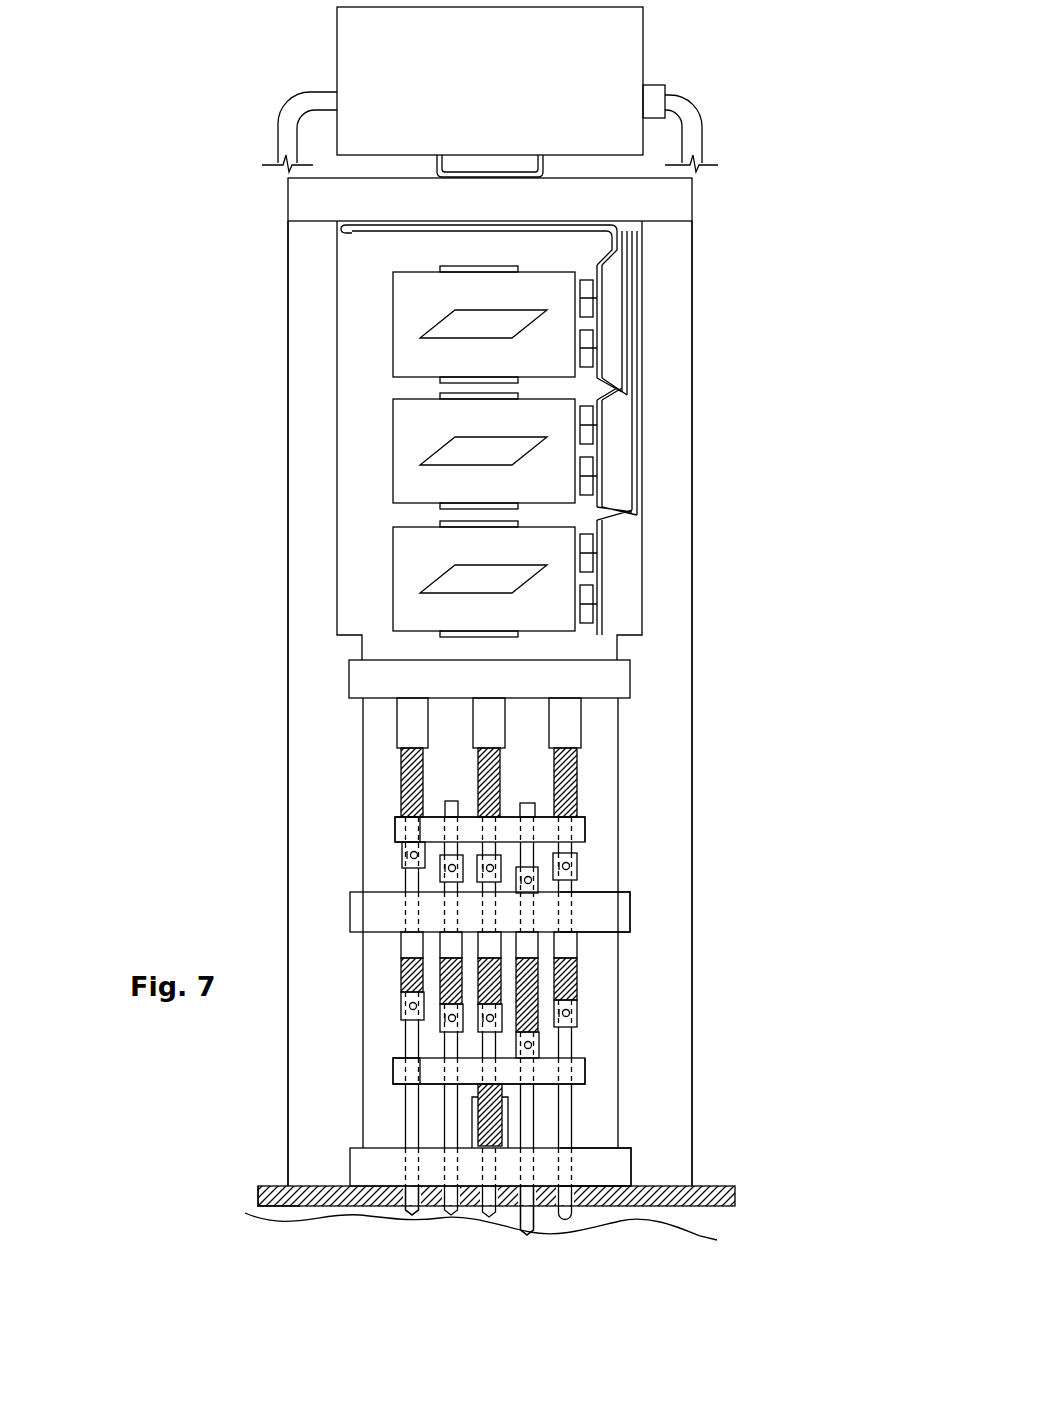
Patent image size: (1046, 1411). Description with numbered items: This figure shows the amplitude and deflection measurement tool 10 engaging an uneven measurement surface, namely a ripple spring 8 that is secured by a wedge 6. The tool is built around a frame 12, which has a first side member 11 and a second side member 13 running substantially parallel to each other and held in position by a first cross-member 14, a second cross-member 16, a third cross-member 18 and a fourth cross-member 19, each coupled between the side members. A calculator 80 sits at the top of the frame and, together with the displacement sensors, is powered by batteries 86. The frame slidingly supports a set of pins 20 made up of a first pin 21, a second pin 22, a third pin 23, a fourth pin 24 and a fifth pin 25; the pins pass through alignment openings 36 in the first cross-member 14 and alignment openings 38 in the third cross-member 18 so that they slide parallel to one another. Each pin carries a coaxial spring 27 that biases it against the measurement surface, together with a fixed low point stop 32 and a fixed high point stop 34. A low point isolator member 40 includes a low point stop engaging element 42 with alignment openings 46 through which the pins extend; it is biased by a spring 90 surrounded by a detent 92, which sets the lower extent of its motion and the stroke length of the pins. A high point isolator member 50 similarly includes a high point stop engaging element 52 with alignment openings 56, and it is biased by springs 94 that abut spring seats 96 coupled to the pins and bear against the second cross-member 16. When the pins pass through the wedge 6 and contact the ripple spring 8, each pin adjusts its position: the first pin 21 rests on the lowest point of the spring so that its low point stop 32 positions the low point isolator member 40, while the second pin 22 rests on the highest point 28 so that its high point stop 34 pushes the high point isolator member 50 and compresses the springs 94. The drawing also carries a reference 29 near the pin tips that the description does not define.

The amplitude and deflection measurement tool 10 is at (220, 99).
The frame 12 is at (256, 306).
The first side member 11 is at (290, 479).
The second side member 13 is at (665, 354).
The calculator 80 is at (498, 101).
The fourth cross-member 19 is at (503, 215).
The batteries 86 is at (563, 312).
The second cross-member 16 is at (504, 692).
The spring seat 96 is at (567, 728).
The spring 94 is at (575, 767).
The high point stop engaging element 52 is at (578, 826).
The alignment openings 56 is at (412, 830).
The high point isolator member 50 is at (350, 828).
The high point stop 34 is at (402, 856).
The third cross-member 18 is at (394, 927).
The alignment openings 38 is at (565, 912).
The spring 27 is at (577, 968).
The low point stop 32 is at (532, 1046).
The low point stop engaging element 42 is at (580, 1066).
The alignment openings 46 is at (412, 1070).
The low point isolator member 40 is at (370, 1074).
The spring 90 is at (500, 1112).
The detent 92 is at (505, 1128).
The first cross-member 14 is at (392, 1184).
The alignment openings 36 is at (565, 1163).
The set of pins 20 is at (620, 1196).
The wedge 6 is at (258, 1196).
The ripple spring 8 is at (730, 1222).
The second pin 22 is at (413, 1216).
The third pin 23 is at (452, 1215).
The fourth pin 24 is at (492, 1219).
The first pin 21 is at (528, 1236).
The fifth pin 25 is at (577, 1222).
The highest point 28 is at (560, 1243).
The pin connection 29 is at (390, 1233).